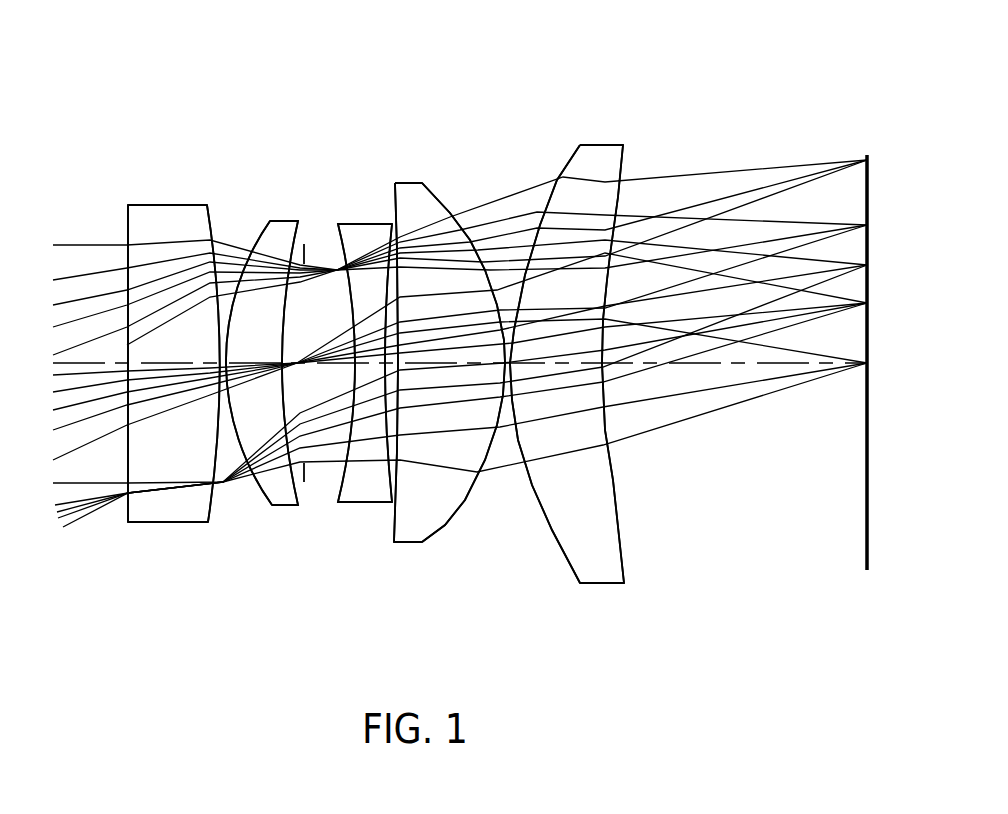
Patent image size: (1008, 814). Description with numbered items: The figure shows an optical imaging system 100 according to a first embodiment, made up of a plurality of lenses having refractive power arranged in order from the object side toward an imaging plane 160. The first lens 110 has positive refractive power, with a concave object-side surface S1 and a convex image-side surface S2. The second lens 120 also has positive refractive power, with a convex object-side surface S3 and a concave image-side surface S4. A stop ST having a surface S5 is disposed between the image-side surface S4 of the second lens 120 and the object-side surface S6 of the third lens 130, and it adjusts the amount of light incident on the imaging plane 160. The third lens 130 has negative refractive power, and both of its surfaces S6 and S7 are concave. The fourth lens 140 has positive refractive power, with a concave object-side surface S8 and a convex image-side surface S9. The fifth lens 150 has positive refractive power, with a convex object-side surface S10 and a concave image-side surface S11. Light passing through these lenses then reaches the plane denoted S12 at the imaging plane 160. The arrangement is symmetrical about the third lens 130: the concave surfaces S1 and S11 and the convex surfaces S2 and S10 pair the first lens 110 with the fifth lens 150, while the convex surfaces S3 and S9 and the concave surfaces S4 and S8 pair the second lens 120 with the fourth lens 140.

The optical imaging system 100 is at (257, 138).
The first lens 110 is at (168, 522).
The second lens 120 is at (271, 507).
The third lens 130 is at (355, 503).
The fourth lens 140 is at (407, 543).
The fifth lens 150 is at (597, 586).
The imaging plane 160 is at (866, 569).
The stop ST is at (306, 483).
The object-side surface of the first lens S1 is at (127, 515).
The image-side surface of the first lens S2 is at (212, 518).
The object-side surface of the second lens S3 is at (228, 512).
The image-side surface of the second lens S4 is at (298, 507).
The surface of the stop S5 is at (305, 244).
The object-side surface of the third lens S6 is at (340, 503).
The image-side surface of the third lens S7 is at (400, 230).
The object-side surface of the fourth lens S8 is at (430, 532).
The image-side surface of the fourth lens S9 is at (467, 496).
The object-side surface of the fifth lens S10 is at (562, 155).
The image-side surface of the fifth lens S11 is at (626, 576).
The imaging plane surface S12 is at (865, 548).